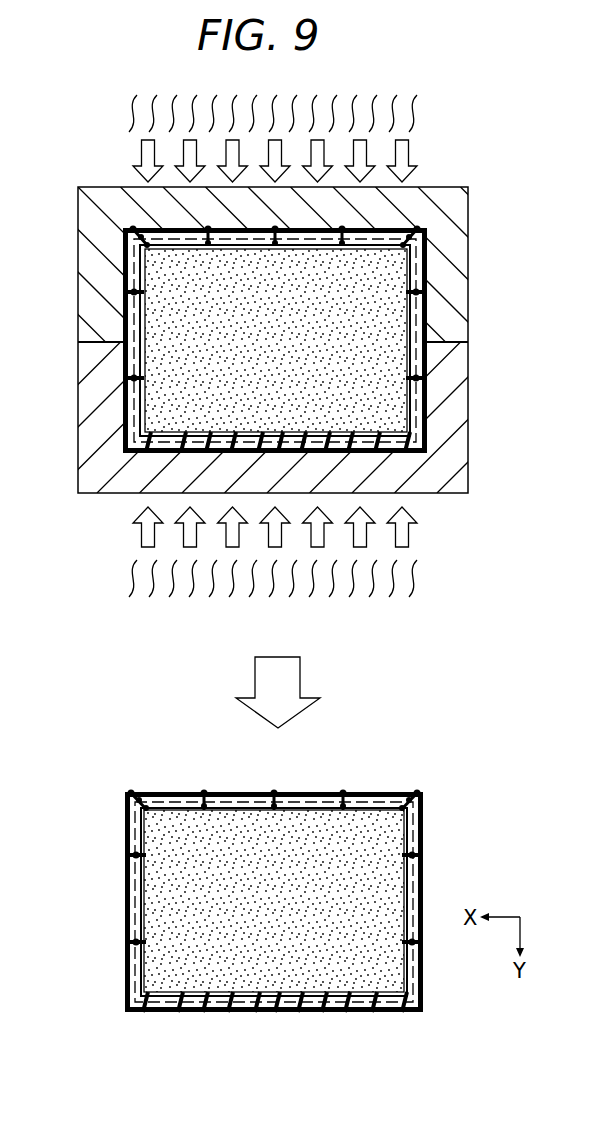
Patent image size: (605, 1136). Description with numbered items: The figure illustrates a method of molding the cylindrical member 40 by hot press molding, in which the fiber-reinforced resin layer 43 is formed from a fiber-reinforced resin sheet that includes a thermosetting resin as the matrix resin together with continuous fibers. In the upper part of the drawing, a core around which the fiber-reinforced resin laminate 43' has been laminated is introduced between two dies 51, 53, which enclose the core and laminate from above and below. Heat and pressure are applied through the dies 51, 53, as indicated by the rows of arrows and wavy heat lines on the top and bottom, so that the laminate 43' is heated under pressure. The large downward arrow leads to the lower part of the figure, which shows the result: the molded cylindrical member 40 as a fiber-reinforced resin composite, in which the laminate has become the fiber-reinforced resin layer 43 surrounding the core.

The cylindrical member 40 is at (412, 794).
The fiber-reinforced resin layer 43 is at (322, 901).
The fiber-reinforced resin laminate 43' is at (324, 339).
The die 51 is at (457, 267).
The die 53 is at (457, 408).